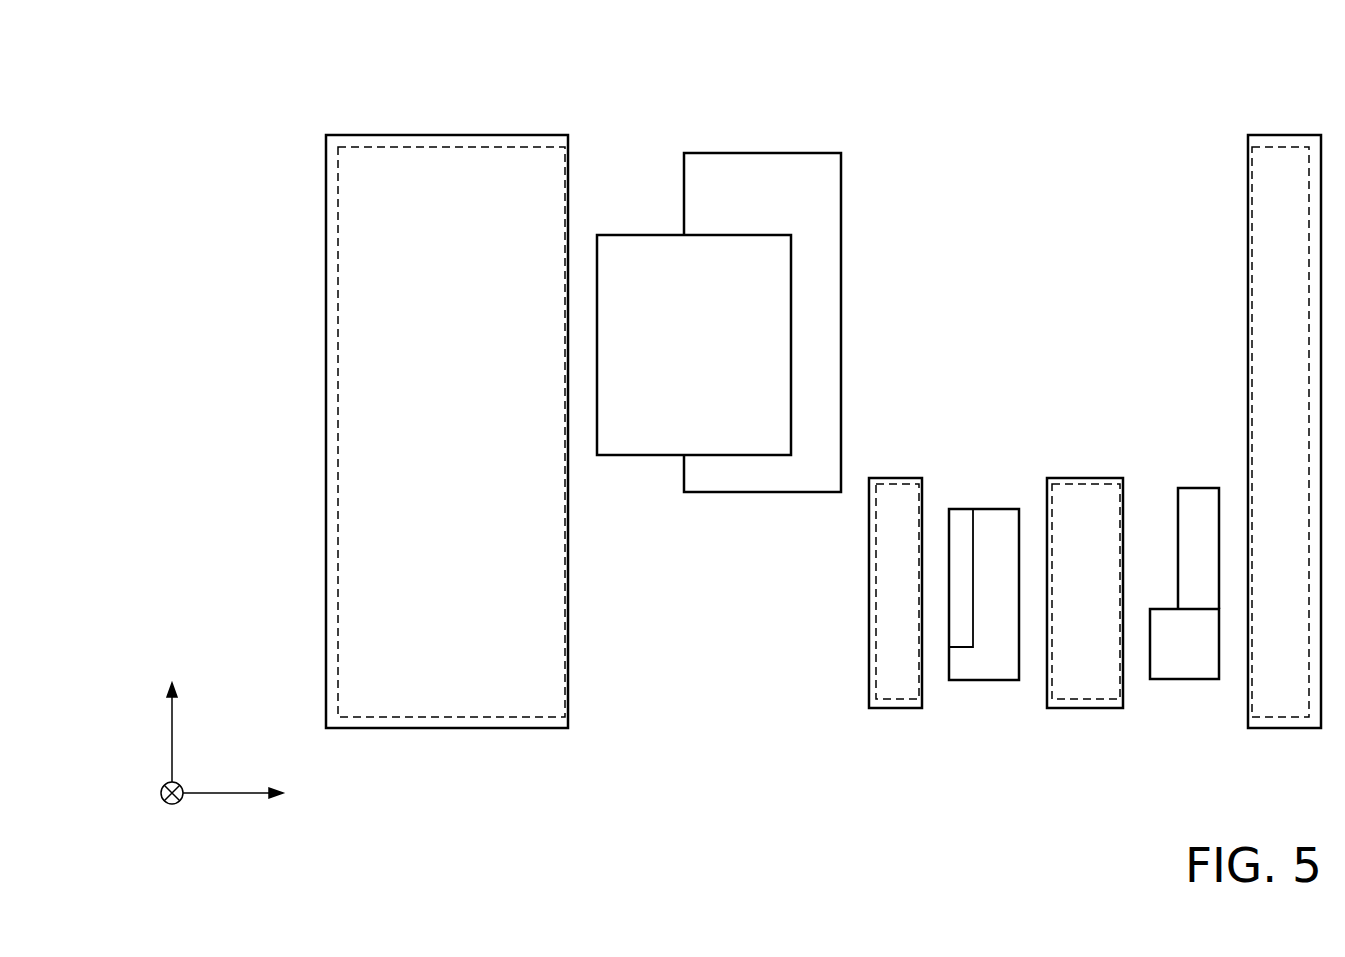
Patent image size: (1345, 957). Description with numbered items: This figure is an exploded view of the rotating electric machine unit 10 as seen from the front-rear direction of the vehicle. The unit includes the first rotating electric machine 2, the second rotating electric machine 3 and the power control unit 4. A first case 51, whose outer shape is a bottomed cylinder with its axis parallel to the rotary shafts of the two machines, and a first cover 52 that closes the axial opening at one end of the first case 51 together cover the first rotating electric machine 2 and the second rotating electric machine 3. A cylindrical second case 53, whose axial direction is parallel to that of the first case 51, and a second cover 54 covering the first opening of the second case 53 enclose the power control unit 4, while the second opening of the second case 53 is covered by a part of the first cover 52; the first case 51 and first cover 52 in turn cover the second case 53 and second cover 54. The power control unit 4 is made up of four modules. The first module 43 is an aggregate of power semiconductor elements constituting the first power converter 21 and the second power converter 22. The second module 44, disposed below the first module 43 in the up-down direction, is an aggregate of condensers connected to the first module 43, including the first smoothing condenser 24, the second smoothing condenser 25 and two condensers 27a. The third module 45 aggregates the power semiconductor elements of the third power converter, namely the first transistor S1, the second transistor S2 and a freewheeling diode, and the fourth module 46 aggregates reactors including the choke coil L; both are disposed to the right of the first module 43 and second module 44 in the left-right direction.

The rotating electric machine unit 10 is at (1153, 87).
The first case 51 is at (482, 134).
The first rotating electric machine 2 is at (787, 153).
The second rotating electric machine 3 is at (640, 234).
The first cover 52 is at (1288, 135).
The power control unit 4 is at (1045, 652).
The second cover 54 is at (899, 478).
The second case 53 is at (1065, 478).
The third module 45 is at (977, 651).
The fourth module 46 is at (936, 631).
The first module 43 is at (1162, 506).
The second module 44 is at (1182, 690).
The first power converter 21 is at (1198, 548).
The second power converter 22 is at (1187, 502).
The first smoothing condenser 24 is at (1184, 644).
The second smoothing condenser 25 is at (1184, 644).
The condenser 27a is at (1185, 669).
The choke coil L is at (958, 635).
The first transistor S1 is at (984, 594).
The second transistor S2 is at (984, 594).